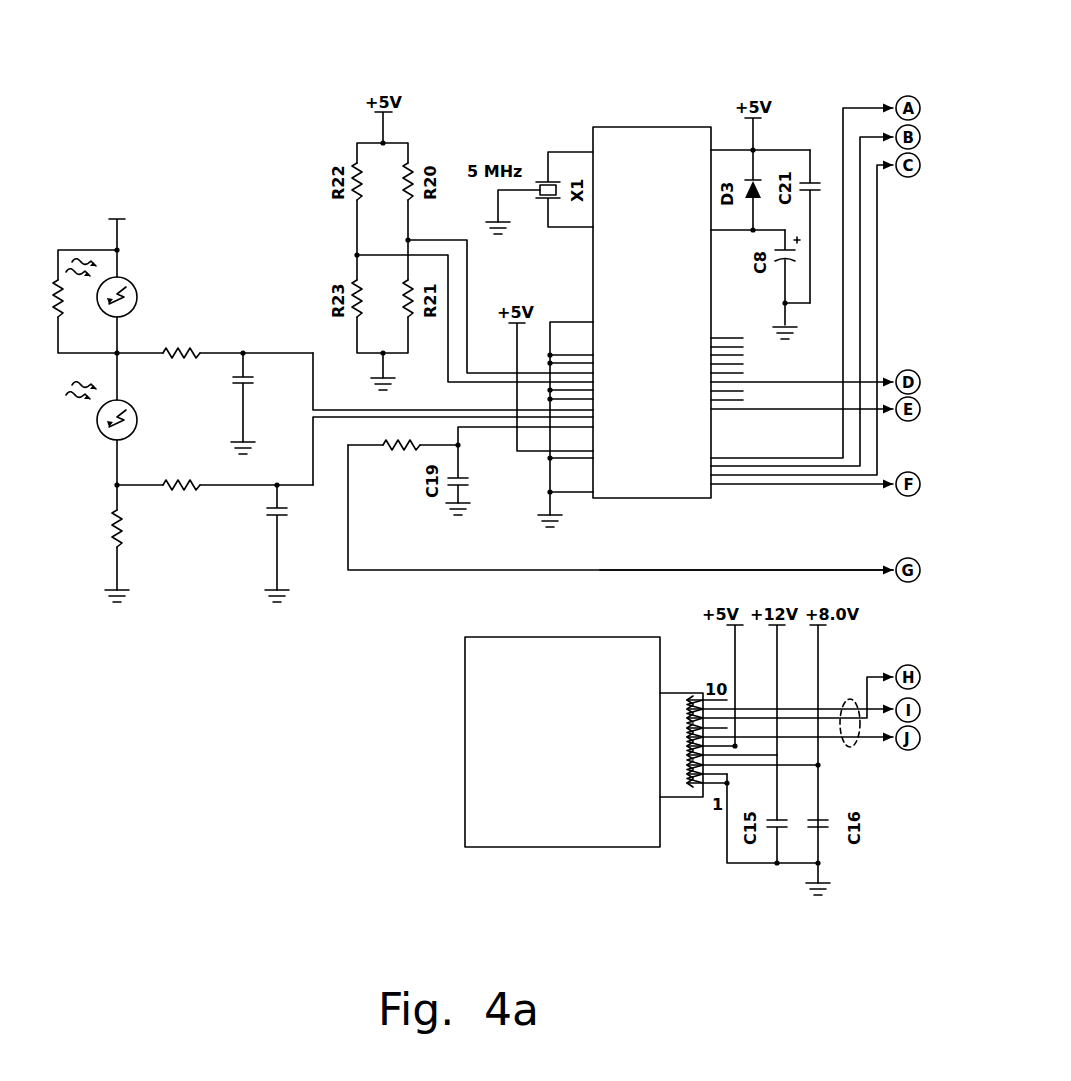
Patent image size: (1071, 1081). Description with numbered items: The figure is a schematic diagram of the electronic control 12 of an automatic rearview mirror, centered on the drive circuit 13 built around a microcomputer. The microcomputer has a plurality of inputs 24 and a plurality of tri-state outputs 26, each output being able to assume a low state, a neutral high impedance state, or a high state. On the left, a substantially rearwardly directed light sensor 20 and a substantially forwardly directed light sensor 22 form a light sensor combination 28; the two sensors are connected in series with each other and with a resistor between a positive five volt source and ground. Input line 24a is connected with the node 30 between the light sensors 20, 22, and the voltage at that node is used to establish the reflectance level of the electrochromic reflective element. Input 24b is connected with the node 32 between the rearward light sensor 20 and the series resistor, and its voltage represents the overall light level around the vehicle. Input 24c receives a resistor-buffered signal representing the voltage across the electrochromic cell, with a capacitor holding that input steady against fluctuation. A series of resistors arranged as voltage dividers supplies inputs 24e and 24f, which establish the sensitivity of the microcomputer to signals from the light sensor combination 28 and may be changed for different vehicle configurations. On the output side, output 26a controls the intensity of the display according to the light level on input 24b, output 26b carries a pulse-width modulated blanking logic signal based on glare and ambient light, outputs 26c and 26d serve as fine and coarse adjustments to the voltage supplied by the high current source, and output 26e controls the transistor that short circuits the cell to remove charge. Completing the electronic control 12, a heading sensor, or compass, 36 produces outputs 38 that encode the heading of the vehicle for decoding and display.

The electronic control 12 is at (797, 551).
The drive circuit 13 is at (700, 63).
The rearwardly directed light sensor 20 is at (138, 414).
The forwardly directed light sensor 22 is at (138, 292).
The inputs 24 is at (518, 466).
The input line 24a is at (346, 408).
The input 24b is at (350, 419).
The input 24c is at (350, 557).
The input 24e is at (448, 300).
The input 24f is at (468, 345).
The outputs 26 is at (790, 446).
The output 26a is at (824, 381).
The output 26b is at (862, 108).
The output 26c is at (855, 137).
The output 26d is at (876, 190).
The output 26e is at (817, 485).
The light sensor combination 28 is at (170, 305).
The node 30 is at (113, 357).
The node 32 is at (113, 483).
The heading sensor 36 is at (465, 748).
The outputs 38 is at (852, 749).